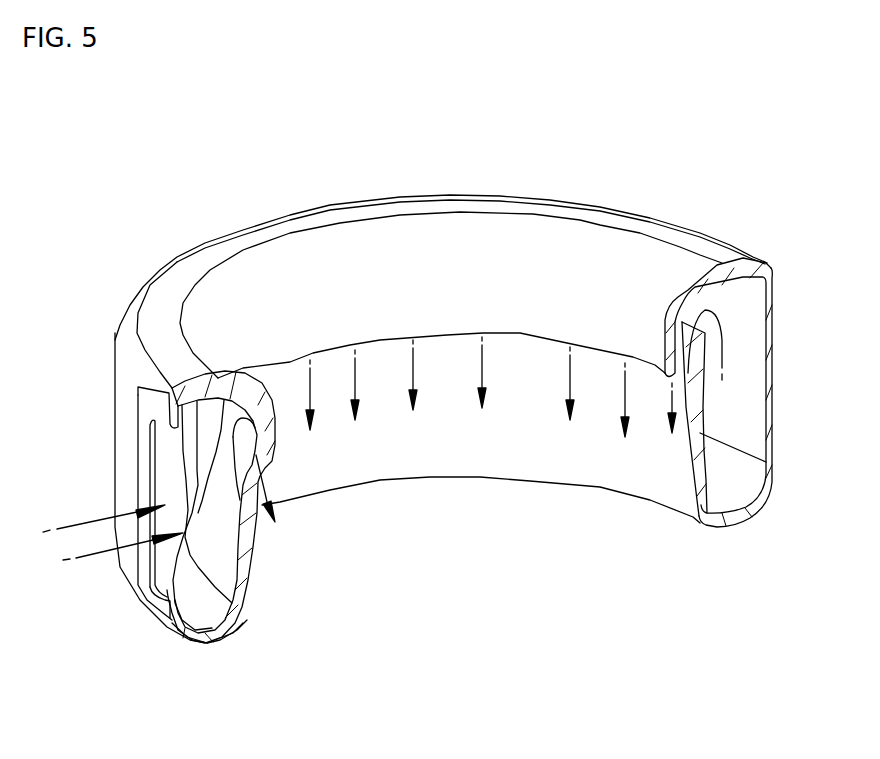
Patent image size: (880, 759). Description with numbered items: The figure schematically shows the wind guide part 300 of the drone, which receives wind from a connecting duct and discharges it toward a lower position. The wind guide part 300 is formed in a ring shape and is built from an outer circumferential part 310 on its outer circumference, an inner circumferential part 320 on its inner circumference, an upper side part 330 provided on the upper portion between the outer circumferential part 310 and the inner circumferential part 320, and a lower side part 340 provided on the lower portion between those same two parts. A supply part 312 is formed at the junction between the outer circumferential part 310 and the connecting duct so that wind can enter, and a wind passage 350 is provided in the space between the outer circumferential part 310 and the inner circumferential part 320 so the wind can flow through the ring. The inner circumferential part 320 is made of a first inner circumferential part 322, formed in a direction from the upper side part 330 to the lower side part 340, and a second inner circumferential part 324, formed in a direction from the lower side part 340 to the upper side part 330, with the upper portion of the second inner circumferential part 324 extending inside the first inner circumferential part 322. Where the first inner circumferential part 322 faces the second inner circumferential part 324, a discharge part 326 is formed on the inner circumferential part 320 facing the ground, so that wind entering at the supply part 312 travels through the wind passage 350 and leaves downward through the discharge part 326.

The wind guide part 300 is at (500, 160).
The outer circumferential part 310 is at (163, 605).
The supply part 312 is at (157, 470).
The inner circumferential part 320 is at (412, 518).
The first inner circumferential part 322 is at (265, 437).
The second inner circumferential part 324 is at (247, 552).
The discharge part 326 is at (672, 365).
The upper side part 330 is at (177, 353).
The lower side part 340 is at (208, 637).
The wind passage 350 is at (137, 401).